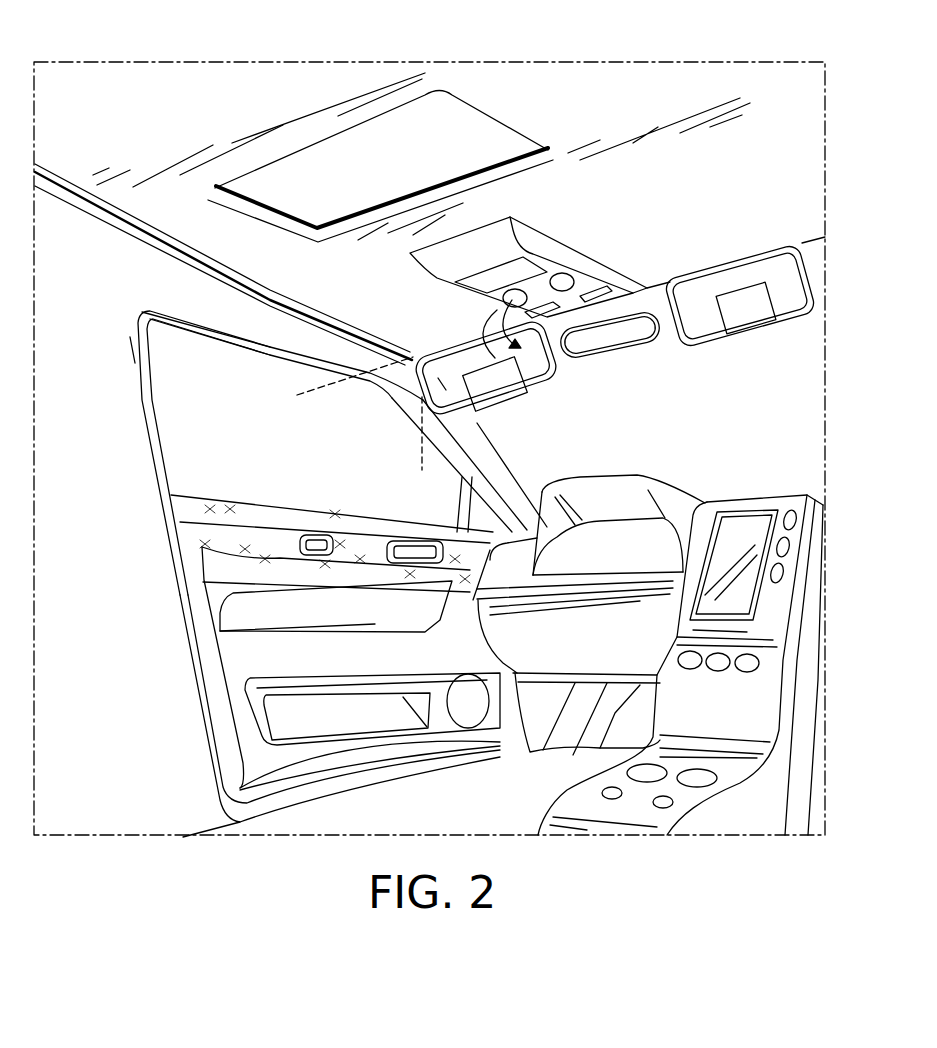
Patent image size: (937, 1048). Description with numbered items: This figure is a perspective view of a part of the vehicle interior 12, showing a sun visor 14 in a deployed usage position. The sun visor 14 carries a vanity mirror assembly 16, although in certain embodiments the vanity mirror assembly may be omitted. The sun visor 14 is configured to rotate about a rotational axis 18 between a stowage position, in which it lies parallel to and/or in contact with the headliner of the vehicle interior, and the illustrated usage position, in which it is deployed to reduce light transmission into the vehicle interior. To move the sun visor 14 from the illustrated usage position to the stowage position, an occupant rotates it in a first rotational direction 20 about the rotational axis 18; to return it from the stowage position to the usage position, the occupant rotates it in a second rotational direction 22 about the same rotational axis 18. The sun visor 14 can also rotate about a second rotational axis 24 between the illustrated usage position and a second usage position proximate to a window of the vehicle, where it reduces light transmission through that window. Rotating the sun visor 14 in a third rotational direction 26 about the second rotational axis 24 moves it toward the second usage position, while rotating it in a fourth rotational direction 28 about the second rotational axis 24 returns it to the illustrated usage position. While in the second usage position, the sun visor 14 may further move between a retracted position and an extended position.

The vehicle interior 12 is at (154, 101).
The sun visor 14 is at (533, 407).
The vanity mirror assembly 16 is at (447, 397).
The rotational axis 18 is at (325, 385).
The first rotational direction 20 is at (481, 321).
The second rotational direction 22 is at (512, 370).
The second rotational axis 24 is at (423, 453).
The third rotational direction 26 is at (443, 382).
The fourth rotational direction 28 is at (413, 435).